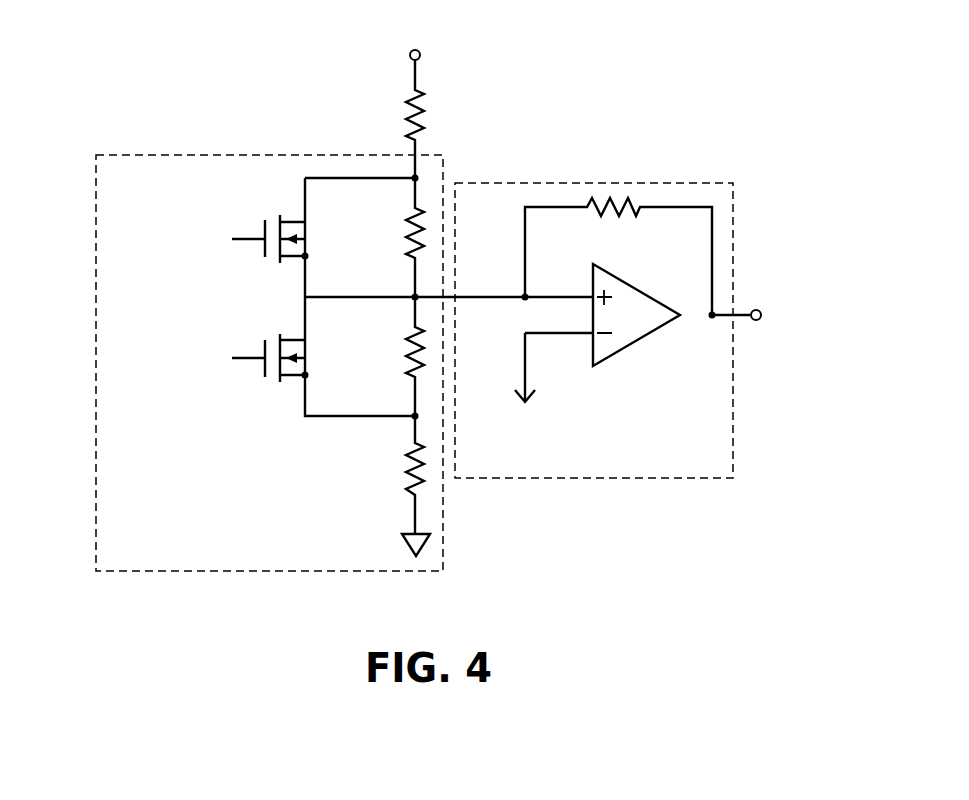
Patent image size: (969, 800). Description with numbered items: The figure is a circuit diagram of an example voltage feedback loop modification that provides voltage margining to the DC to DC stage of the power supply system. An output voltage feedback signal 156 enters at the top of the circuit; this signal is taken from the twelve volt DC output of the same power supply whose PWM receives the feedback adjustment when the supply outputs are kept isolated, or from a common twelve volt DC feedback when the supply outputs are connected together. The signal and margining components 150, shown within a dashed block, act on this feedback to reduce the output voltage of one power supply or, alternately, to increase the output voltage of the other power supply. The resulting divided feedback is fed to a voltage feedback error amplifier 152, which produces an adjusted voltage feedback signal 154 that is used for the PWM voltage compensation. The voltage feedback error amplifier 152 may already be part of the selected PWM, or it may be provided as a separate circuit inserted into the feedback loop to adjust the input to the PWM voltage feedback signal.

The signal and margining components 150 is at (85, 160).
The voltage feedback error amplifier 152 is at (734, 207).
The adjusted voltage feedback signal 154 is at (757, 309).
The output voltage feedback signal 156 is at (410, 55).